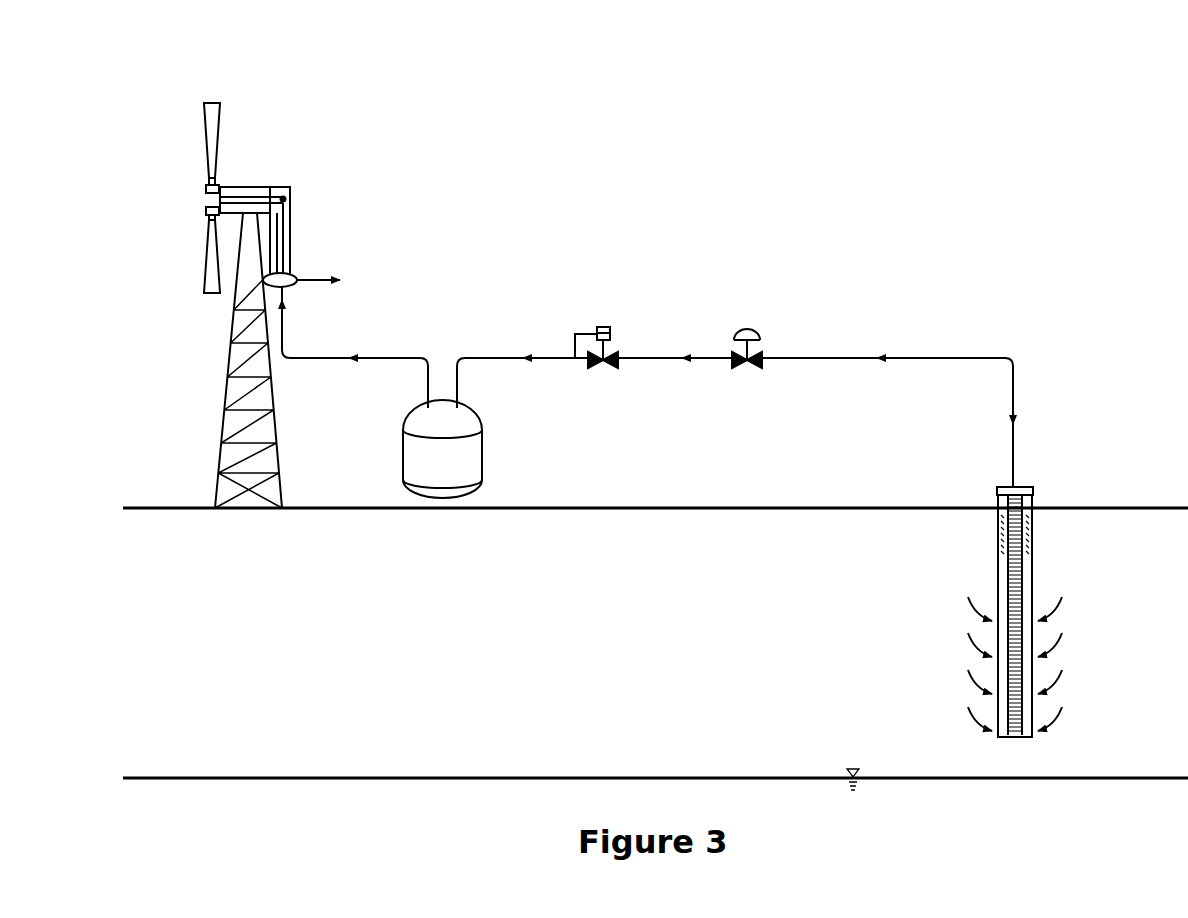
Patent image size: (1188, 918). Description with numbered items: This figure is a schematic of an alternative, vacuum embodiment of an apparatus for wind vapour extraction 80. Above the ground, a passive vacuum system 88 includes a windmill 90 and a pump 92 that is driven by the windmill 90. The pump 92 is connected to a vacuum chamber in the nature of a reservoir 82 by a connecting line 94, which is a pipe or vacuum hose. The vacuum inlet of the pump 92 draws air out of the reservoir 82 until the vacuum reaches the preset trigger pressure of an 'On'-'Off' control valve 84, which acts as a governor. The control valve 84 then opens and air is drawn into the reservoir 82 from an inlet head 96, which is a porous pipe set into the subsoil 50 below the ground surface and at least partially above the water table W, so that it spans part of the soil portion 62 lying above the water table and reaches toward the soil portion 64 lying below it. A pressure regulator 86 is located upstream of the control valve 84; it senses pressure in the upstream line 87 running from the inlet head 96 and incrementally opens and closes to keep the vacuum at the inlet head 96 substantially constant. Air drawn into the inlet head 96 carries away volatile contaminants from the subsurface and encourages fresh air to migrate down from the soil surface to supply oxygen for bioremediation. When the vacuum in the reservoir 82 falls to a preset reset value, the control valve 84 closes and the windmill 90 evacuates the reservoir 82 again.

The subsoil 50 is at (175, 530).
The portion of soil above the water table 62 is at (414, 622).
The portion of soil below the water table 64 is at (434, 823).
The water table W is at (326, 774).
The apparatus for wind vapour extraction 80 is at (749, 128).
The reservoir 82 is at (486, 470).
The control valve 84 is at (603, 325).
The pressure regulator 86 is at (747, 328).
The upstream line 87 is at (825, 356).
The passive vacuum system 88 is at (250, 110).
The windmill 90 is at (259, 183).
The pump 92 is at (298, 273).
The connecting line 94 is at (346, 368).
The inlet head 96 is at (981, 494).